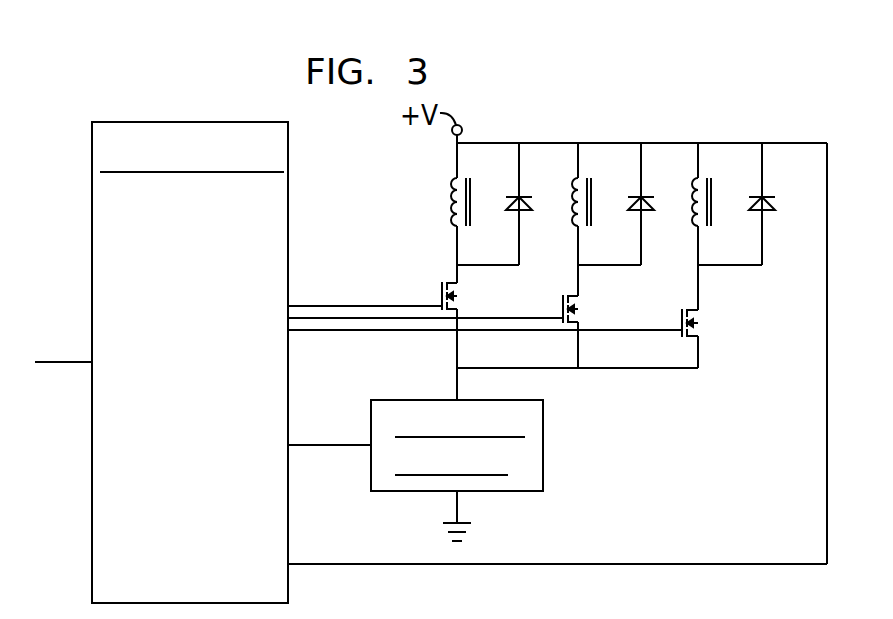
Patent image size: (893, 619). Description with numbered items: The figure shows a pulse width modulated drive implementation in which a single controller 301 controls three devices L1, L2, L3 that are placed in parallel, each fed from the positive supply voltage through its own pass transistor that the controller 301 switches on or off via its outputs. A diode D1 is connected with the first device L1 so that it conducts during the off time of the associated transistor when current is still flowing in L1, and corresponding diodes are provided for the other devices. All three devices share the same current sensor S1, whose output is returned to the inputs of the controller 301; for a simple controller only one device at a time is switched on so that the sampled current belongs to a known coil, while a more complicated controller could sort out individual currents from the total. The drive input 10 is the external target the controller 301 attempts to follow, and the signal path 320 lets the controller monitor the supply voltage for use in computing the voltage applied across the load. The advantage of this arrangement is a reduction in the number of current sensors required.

The controller 301 is at (232, 122).
The drive input 10 is at (85, 362).
The signal path 320 is at (302, 563).
The current sensor S1 is at (410, 400).
The device to be controlled L1 is at (472, 196).
The device to be controlled L2 is at (593, 196).
The device to be controlled L3 is at (713, 196).
The diode D1 is at (531, 201).